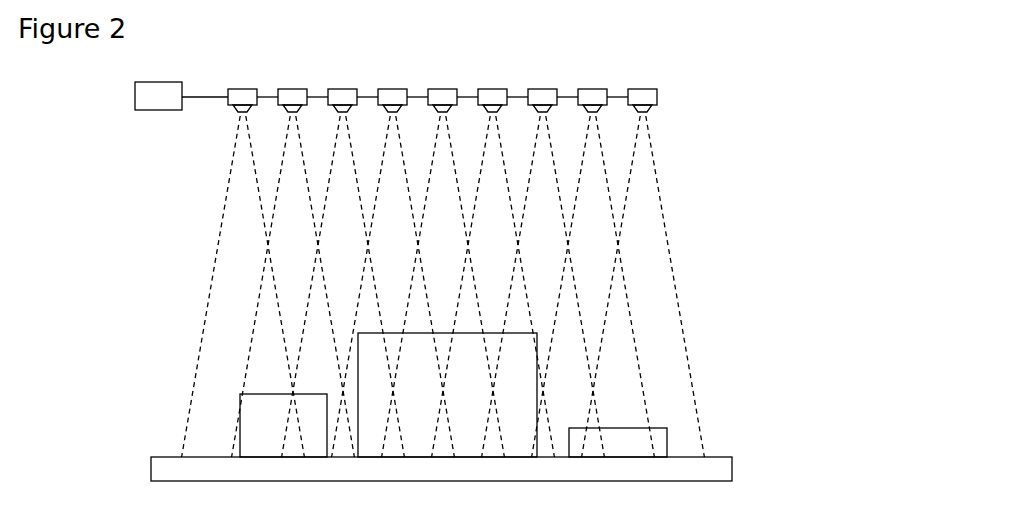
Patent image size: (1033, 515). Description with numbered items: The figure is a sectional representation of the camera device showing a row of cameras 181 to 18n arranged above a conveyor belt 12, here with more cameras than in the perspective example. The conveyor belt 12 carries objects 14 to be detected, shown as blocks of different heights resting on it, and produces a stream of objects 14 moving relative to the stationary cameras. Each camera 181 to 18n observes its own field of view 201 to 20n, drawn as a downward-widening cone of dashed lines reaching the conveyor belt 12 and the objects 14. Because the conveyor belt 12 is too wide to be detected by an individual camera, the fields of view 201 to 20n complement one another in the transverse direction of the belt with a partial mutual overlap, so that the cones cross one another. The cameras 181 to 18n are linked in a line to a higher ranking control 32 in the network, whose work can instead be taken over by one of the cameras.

The conveyor belt 12 is at (717, 467).
The objects 14 is at (252, 420).
The first camera 181 is at (246, 100).
The n-th camera 18n is at (652, 102).
The first field of view 201 is at (226, 224).
The n-th field of view 20n is at (663, 242).
The higher ranking control 32 is at (152, 103).